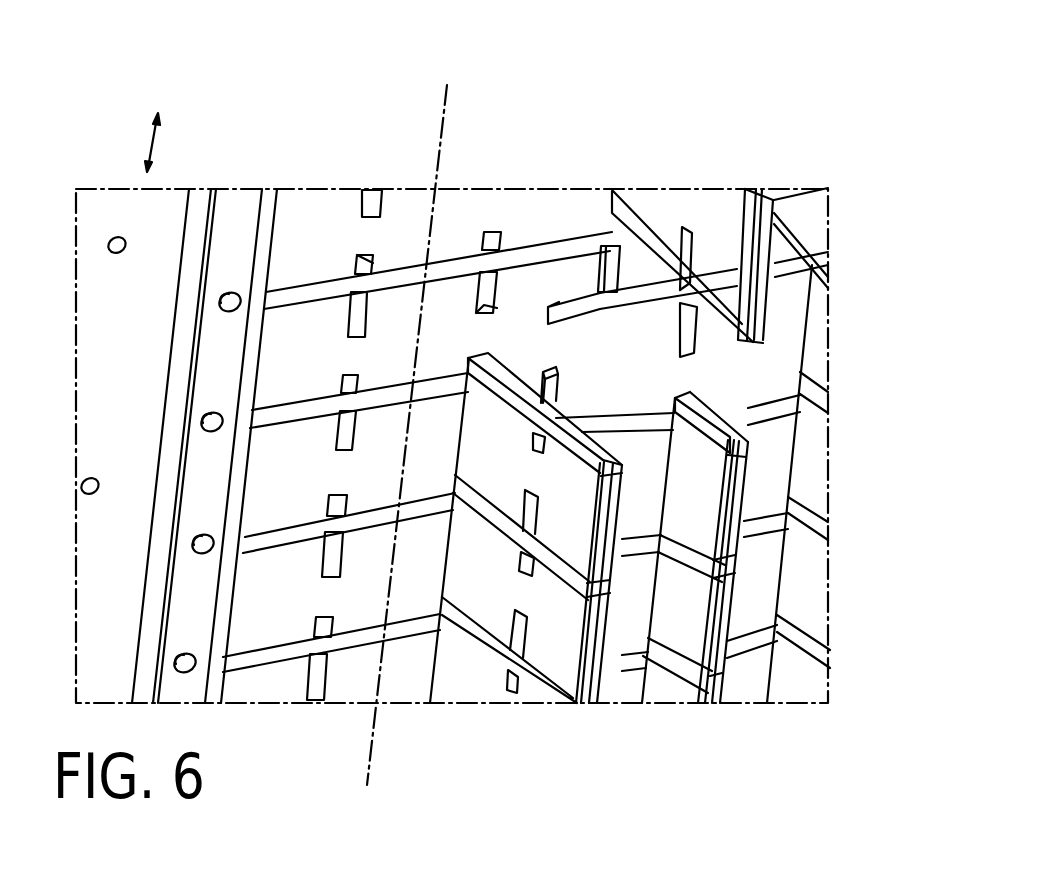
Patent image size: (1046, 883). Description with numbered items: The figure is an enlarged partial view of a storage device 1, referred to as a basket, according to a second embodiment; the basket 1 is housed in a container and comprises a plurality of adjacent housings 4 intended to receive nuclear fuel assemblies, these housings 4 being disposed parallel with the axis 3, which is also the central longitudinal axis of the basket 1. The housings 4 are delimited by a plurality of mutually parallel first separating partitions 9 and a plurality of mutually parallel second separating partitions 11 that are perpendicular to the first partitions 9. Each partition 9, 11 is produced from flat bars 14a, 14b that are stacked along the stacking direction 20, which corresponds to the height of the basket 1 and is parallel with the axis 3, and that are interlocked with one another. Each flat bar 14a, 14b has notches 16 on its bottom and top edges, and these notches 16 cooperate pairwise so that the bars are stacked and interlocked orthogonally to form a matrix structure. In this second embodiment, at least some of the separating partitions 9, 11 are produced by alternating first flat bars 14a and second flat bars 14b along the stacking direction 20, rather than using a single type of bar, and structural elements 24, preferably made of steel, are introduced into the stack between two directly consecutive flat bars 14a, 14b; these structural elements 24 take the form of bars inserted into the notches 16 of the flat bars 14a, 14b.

The storage device 1 is at (645, 101).
The axis 3 is at (447, 84).
The inner housing 4 is at (677, 522).
The first separating partition 9 is at (174, 289).
The second separating partition 11 is at (603, 628).
The first flat bar 14a is at (328, 232).
The second flat bar 14b is at (515, 450).
The notch 16 is at (363, 253).
The stacking direction 20 is at (150, 142).
The structural element 24 is at (283, 293).